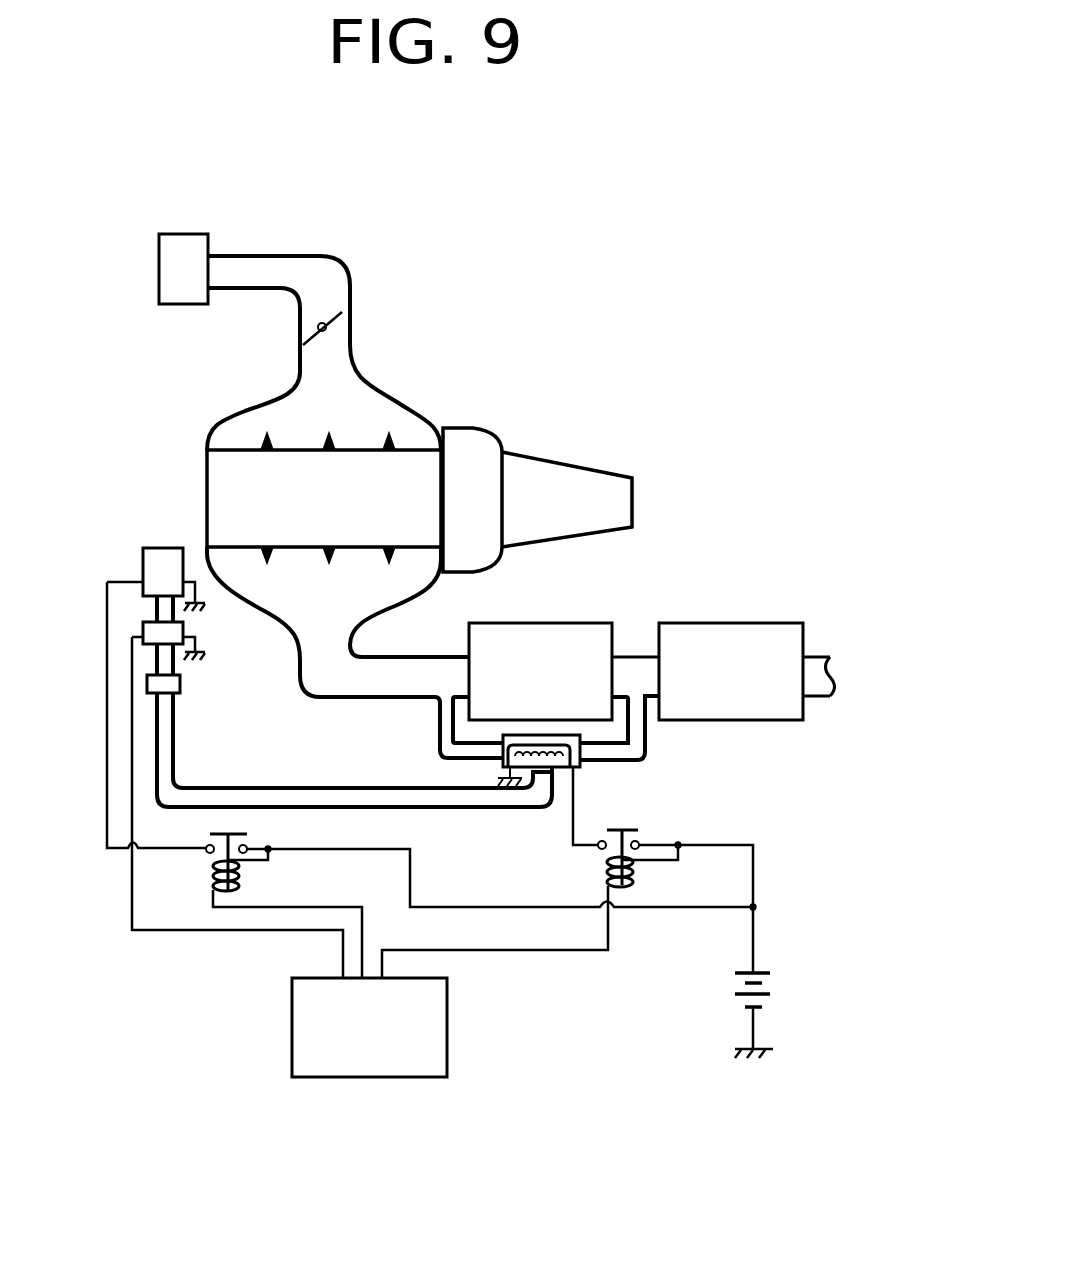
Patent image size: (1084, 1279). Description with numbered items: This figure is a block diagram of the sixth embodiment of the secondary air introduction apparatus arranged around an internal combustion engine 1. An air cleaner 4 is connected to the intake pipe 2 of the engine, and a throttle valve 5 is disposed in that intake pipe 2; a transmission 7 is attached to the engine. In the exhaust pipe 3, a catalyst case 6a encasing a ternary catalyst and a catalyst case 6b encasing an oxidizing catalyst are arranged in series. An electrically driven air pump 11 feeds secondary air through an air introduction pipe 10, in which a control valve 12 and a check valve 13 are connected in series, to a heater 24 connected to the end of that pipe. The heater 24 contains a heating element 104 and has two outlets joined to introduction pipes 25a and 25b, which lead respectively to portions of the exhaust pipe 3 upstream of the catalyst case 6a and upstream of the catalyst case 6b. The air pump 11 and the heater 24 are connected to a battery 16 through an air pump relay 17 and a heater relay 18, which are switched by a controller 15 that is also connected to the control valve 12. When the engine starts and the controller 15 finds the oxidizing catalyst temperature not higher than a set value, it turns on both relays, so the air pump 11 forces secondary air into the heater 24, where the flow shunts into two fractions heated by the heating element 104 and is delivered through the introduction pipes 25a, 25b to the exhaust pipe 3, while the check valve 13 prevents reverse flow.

The internal combustion engine 1 is at (420, 462).
The intake pipe 2 is at (403, 418).
The exhaust pipe 3 is at (327, 690).
The air cleaner 4 is at (190, 245).
The throttle valve 5 is at (350, 333).
The catalyst case 6a is at (563, 628).
The catalyst case 6b is at (698, 628).
The transmission 7 is at (568, 492).
The air introduction pipe 10 is at (347, 788).
The air pump 11 is at (178, 518).
The control valve 12 is at (177, 625).
The check valve 13 is at (177, 679).
The controller 15 is at (447, 1037).
The battery 16 is at (737, 982).
The air pump relay 17 is at (248, 837).
The heater relay 18 is at (640, 835).
The heater 24 is at (583, 768).
The introduction pipe 25a is at (455, 722).
The introduction pipe 25b is at (637, 735).
The heating element 104 is at (557, 757).